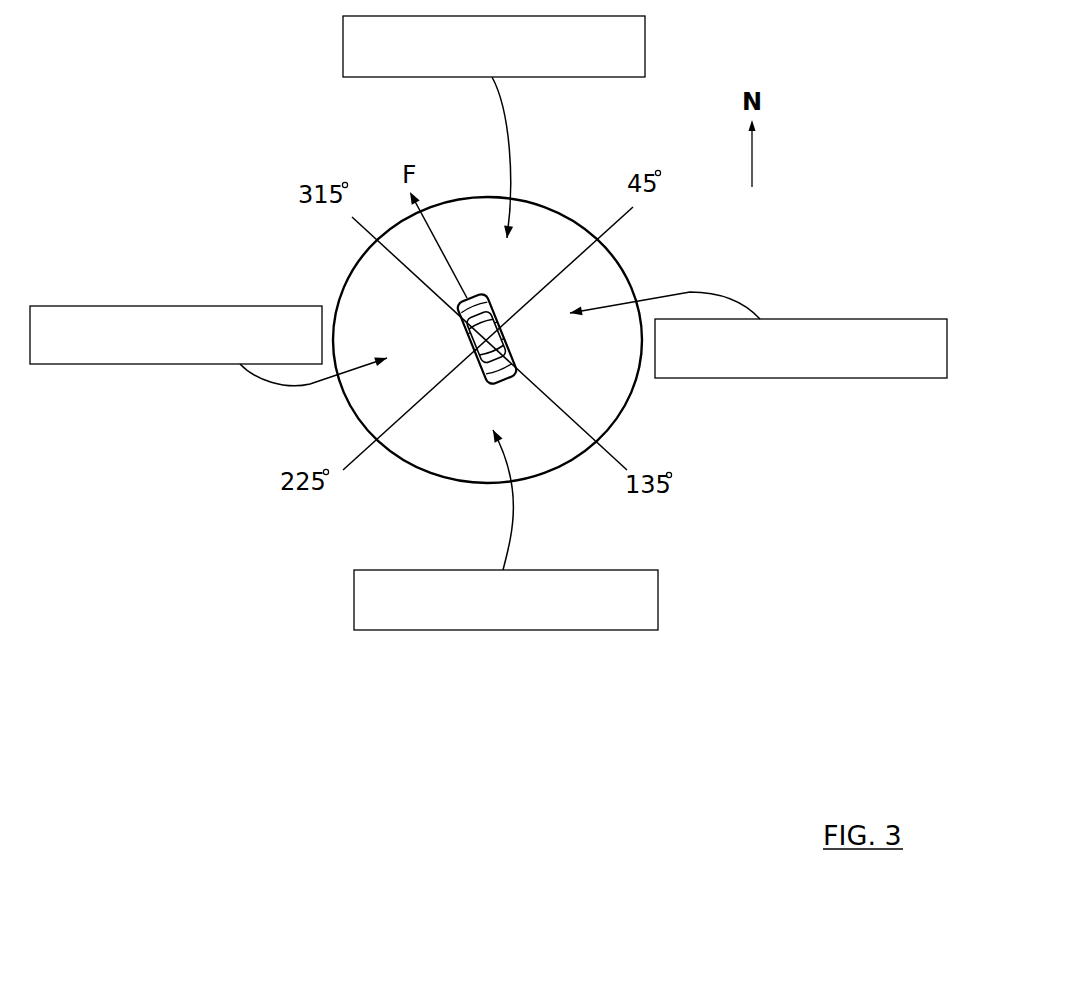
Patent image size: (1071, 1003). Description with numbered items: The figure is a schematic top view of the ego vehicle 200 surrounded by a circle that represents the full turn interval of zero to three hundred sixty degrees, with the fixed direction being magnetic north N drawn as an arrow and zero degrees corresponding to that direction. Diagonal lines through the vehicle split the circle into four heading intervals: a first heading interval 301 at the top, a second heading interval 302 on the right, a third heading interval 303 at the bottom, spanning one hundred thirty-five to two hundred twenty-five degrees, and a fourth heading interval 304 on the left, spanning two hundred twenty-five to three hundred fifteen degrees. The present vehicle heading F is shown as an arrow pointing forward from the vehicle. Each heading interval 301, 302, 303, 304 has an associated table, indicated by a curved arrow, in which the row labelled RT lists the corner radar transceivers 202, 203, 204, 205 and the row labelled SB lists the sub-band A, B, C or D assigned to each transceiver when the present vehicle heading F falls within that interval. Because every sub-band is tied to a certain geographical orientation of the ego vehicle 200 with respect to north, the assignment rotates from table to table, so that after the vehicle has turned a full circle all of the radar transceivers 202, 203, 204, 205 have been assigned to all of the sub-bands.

The ego vehicle 200 is at (490, 352).
The radar transceiver 202 is at (405, 43).
The radar transceiver 203 is at (469, 43).
The radar transceiver 204 is at (539, 43).
The radar transceiver 205 is at (602, 43).
The first heading interval 301 is at (494, 152).
The second heading interval 302 is at (610, 371).
The third heading interval 303 is at (490, 422).
The fourth heading interval 304 is at (414, 329).